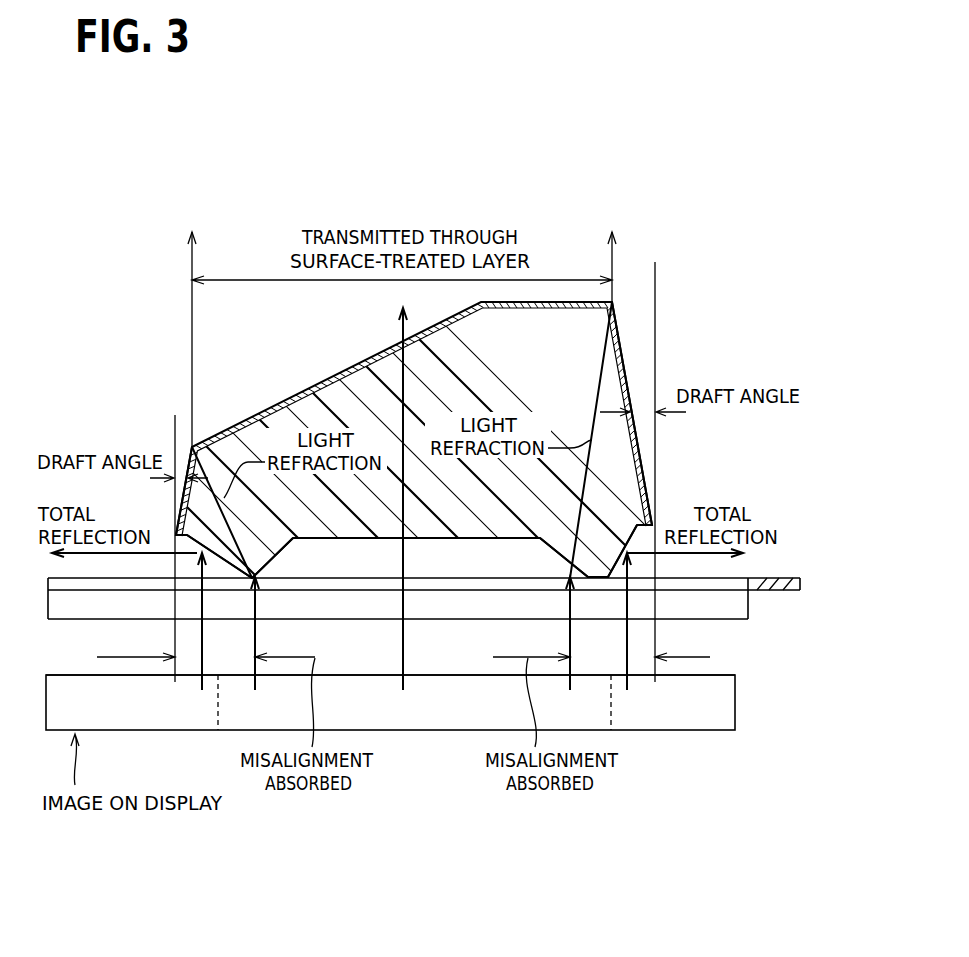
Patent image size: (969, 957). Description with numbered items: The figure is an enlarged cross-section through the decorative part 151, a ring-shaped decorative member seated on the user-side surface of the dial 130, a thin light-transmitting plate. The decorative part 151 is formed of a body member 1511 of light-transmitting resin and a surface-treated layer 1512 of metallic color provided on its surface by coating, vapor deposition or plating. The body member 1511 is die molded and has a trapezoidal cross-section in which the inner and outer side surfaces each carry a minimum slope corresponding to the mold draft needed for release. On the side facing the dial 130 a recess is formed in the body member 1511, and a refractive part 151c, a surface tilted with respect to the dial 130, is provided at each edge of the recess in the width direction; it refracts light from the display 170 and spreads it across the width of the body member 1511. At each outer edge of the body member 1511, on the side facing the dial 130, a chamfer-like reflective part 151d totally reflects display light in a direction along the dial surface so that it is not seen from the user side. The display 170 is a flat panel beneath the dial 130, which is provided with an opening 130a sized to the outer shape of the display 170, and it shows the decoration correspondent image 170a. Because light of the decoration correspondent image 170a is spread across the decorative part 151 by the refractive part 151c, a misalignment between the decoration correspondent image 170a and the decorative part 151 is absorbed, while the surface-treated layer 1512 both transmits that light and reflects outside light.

The decorative part 151 is at (359, 440).
The body member 1511 is at (308, 390).
The surface-treated layer 1512 is at (345, 369).
The refractive part 151c is at (282, 550).
The reflective part 151d is at (178, 533).
The dial 130 is at (435, 571).
The opening 130a is at (742, 578).
The display 170 is at (413, 699).
The decoration correspondent image 170a is at (424, 718).